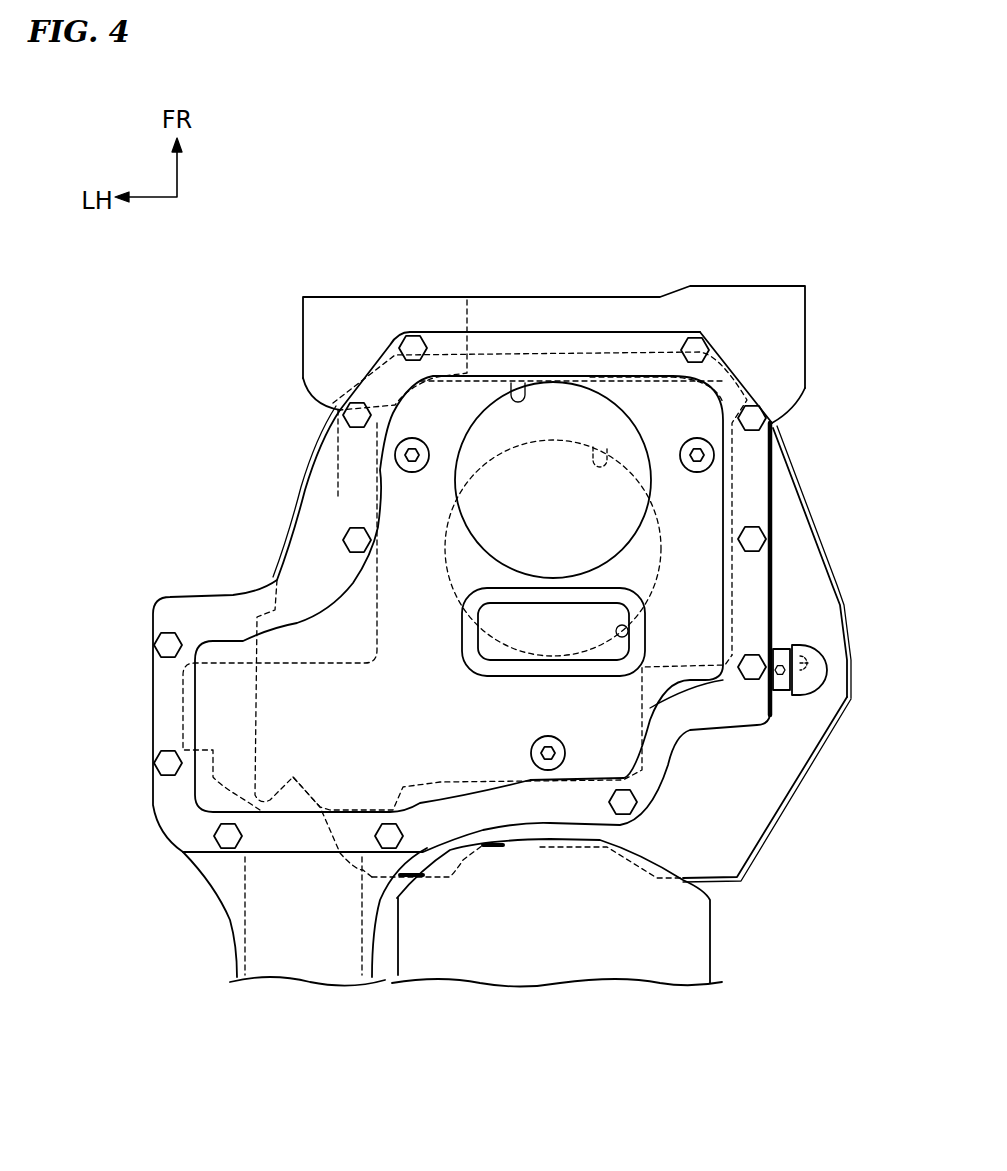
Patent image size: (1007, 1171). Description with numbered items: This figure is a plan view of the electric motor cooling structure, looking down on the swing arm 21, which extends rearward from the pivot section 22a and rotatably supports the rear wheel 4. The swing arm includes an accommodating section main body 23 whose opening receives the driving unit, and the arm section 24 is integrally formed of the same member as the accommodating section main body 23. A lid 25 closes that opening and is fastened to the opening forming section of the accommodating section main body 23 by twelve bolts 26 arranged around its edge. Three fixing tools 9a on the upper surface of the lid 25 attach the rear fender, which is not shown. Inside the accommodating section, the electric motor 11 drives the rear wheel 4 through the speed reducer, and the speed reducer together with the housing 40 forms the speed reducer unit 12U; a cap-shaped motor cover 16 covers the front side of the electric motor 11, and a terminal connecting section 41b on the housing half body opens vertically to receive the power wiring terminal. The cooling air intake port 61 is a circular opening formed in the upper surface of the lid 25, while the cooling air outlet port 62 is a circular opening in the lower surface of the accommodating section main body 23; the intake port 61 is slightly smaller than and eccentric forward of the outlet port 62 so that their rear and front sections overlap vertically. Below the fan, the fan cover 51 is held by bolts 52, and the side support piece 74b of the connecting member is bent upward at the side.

The rear wheel 4 is at (695, 943).
The fixing tool 9a is at (405, 457).
The electric motor 11 is at (355, 603).
The speed reducer unit 12U is at (168, 717).
The motor cover 16 is at (460, 370).
The swing arm 21 is at (198, 880).
The pivot section 22a is at (742, 310).
The accommodating section main body 23 is at (772, 520).
The arm section 24 is at (233, 953).
The lid 25 is at (568, 340).
The bolt 26 is at (411, 345).
The housing 40 is at (660, 718).
The terminal connecting section 41b is at (640, 643).
The fan cover 51 is at (758, 853).
The bolt 52 is at (830, 670).
The cooling air intake port 61 is at (518, 388).
The cooling air outlet port 62 is at (598, 452).
The side support piece 74b is at (778, 688).